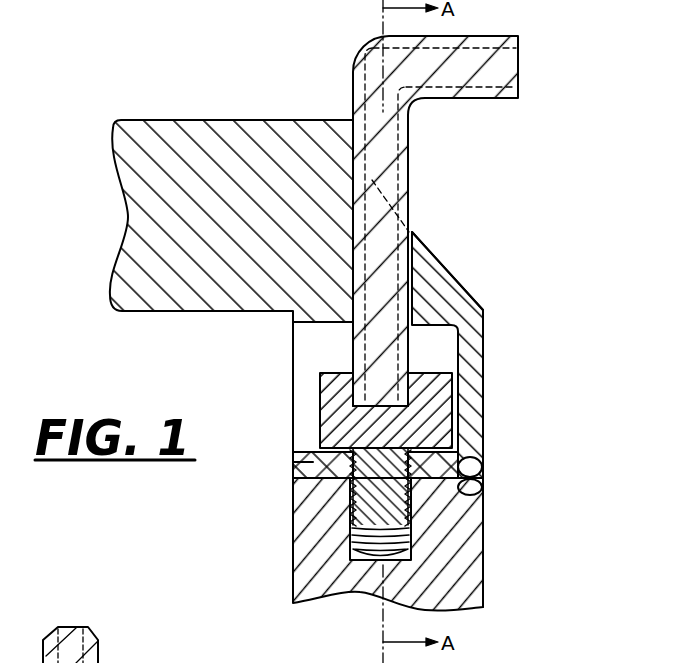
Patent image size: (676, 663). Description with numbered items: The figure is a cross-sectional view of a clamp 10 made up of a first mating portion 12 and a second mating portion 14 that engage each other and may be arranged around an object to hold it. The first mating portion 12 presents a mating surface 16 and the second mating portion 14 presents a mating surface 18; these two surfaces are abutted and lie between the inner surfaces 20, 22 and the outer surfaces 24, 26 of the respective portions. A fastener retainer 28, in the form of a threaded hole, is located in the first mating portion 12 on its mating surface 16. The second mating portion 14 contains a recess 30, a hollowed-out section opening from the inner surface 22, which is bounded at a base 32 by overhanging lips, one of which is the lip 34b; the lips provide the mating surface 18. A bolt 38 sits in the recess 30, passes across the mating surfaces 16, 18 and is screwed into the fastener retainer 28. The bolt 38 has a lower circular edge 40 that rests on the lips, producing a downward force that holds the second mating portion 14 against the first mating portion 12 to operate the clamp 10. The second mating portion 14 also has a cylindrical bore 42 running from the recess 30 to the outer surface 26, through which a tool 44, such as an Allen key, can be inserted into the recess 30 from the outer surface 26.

The clamp 10 is at (522, 381).
The first mating portion 12 is at (487, 563).
The second mating portion 14 is at (458, 278).
The mating surface 16 is at (483, 483).
The mating surface 18 is at (483, 457).
The inner surface 20 is at (326, 480).
The inner surface 22 is at (188, 312).
The outer surface 24 is at (486, 582).
The outer surface 26 is at (473, 296).
The fastener retainer 28 is at (414, 540).
The recess 30 is at (313, 353).
The base 32 is at (302, 438).
The lip 34b is at (313, 463).
The bolt 38 is at (337, 407).
The lower circular edge 40 is at (312, 462).
The cylindrical bore 42 is at (413, 258).
The tool 44 is at (490, 98).